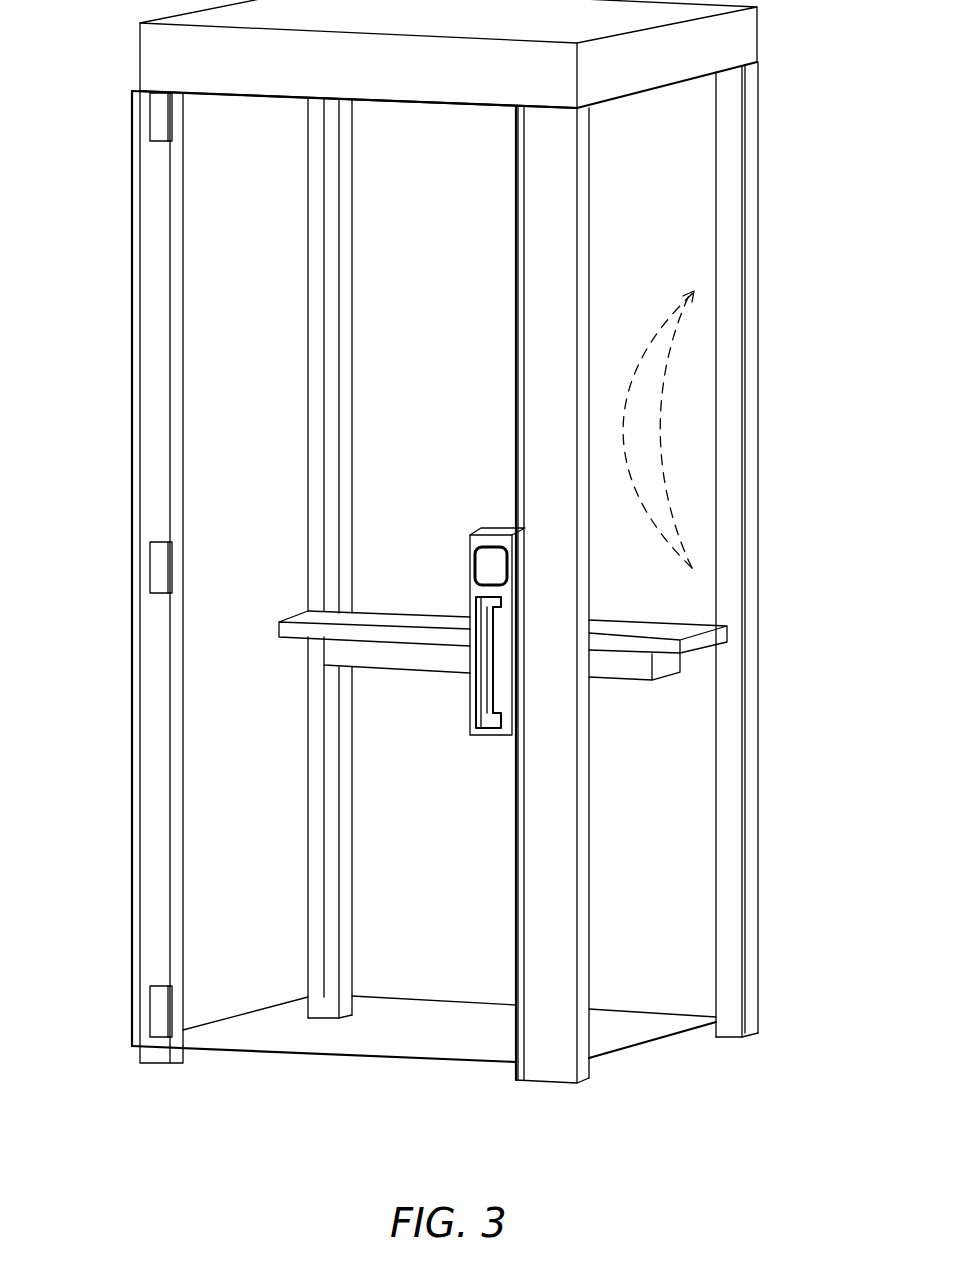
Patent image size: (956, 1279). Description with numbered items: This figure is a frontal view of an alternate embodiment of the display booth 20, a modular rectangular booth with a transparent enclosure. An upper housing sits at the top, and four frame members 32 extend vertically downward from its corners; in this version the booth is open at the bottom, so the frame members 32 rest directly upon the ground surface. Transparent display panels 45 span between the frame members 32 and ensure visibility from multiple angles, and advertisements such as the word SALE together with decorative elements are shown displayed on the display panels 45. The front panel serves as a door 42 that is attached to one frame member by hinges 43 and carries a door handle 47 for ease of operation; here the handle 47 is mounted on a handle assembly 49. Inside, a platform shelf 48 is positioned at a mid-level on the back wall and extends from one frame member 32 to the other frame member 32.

The display booth 20 is at (283, 1116).
The frame members 32 is at (305, 703).
The door 42 is at (263, 1053).
The hinges 43 is at (150, 585).
The display panels 45 is at (200, 333).
The door handle 47 is at (476, 700).
The platform shelf 48 is at (700, 648).
The handle assembly 49 is at (505, 735).